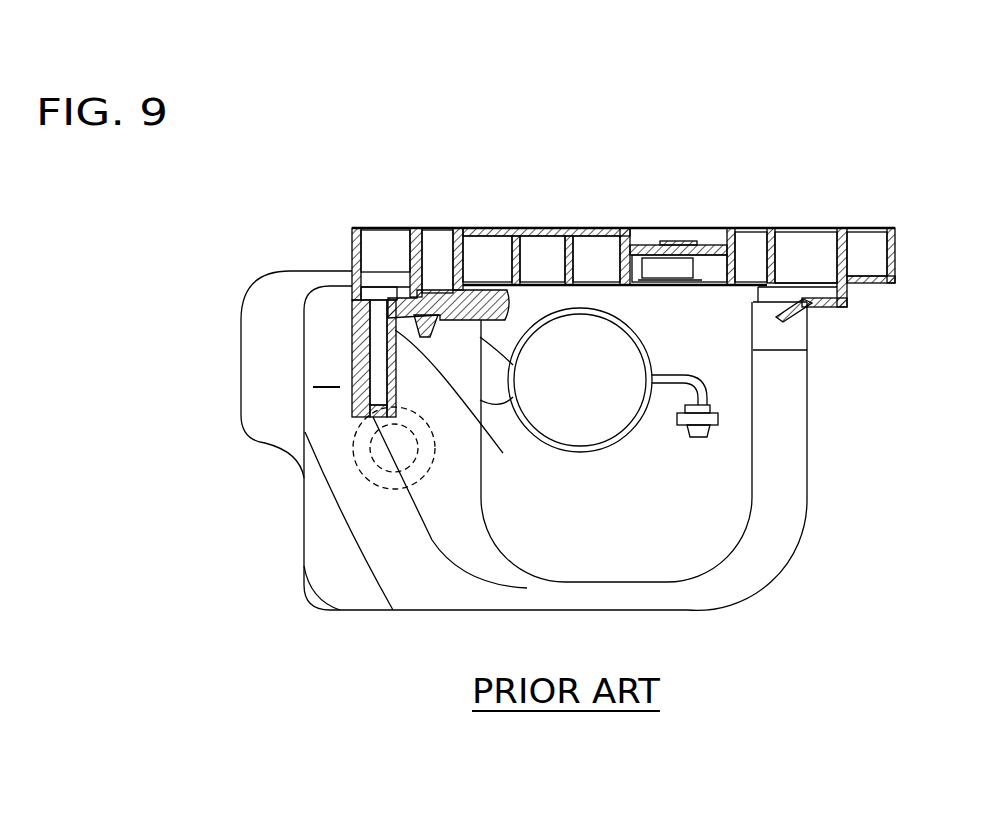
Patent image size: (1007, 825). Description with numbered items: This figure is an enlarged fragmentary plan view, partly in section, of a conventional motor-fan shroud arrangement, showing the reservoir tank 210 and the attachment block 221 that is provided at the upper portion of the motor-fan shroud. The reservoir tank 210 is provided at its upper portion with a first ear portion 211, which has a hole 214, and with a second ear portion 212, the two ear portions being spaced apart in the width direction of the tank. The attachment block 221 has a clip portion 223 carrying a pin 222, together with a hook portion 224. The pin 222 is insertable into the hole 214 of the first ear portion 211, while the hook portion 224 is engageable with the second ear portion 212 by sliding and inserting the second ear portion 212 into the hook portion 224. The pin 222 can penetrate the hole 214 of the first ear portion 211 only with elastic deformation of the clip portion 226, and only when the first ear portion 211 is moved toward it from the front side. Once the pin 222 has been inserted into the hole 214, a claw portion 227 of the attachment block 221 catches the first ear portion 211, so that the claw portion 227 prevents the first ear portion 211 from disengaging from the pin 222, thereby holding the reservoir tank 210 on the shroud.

The reservoir tank 210 is at (770, 573).
The first ear portion 211 is at (353, 315).
The second ear portion 212 is at (800, 292).
The hole 214 is at (408, 282).
The attachment block 221 is at (742, 227).
The pin 222 is at (520, 370).
The clip portion 223 is at (432, 224).
The hook portion 224 is at (825, 322).
The clip portion 226 is at (390, 367).
The claw portion 227 is at (476, 407).